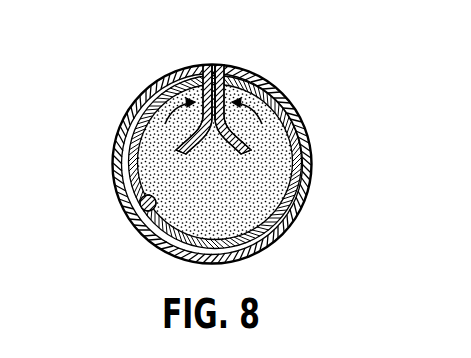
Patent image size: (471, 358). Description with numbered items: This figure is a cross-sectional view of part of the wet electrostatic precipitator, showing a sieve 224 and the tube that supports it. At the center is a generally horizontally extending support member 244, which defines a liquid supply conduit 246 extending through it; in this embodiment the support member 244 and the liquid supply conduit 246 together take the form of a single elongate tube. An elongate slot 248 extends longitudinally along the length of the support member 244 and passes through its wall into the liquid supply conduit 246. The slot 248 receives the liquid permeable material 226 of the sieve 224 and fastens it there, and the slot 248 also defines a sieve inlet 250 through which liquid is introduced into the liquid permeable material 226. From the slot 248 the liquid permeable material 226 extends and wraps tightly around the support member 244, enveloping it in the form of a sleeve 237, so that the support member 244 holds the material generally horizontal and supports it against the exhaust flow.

The sieve 224 is at (223, 140).
The liquid permeable material 226 is at (286, 97).
The sleeve 237 is at (314, 139).
The support member 244 is at (296, 167).
The liquid supply conduit 246 is at (145, 200).
The elongate slot 248 is at (223, 67).
The sieve inlet 250 is at (213, 66).